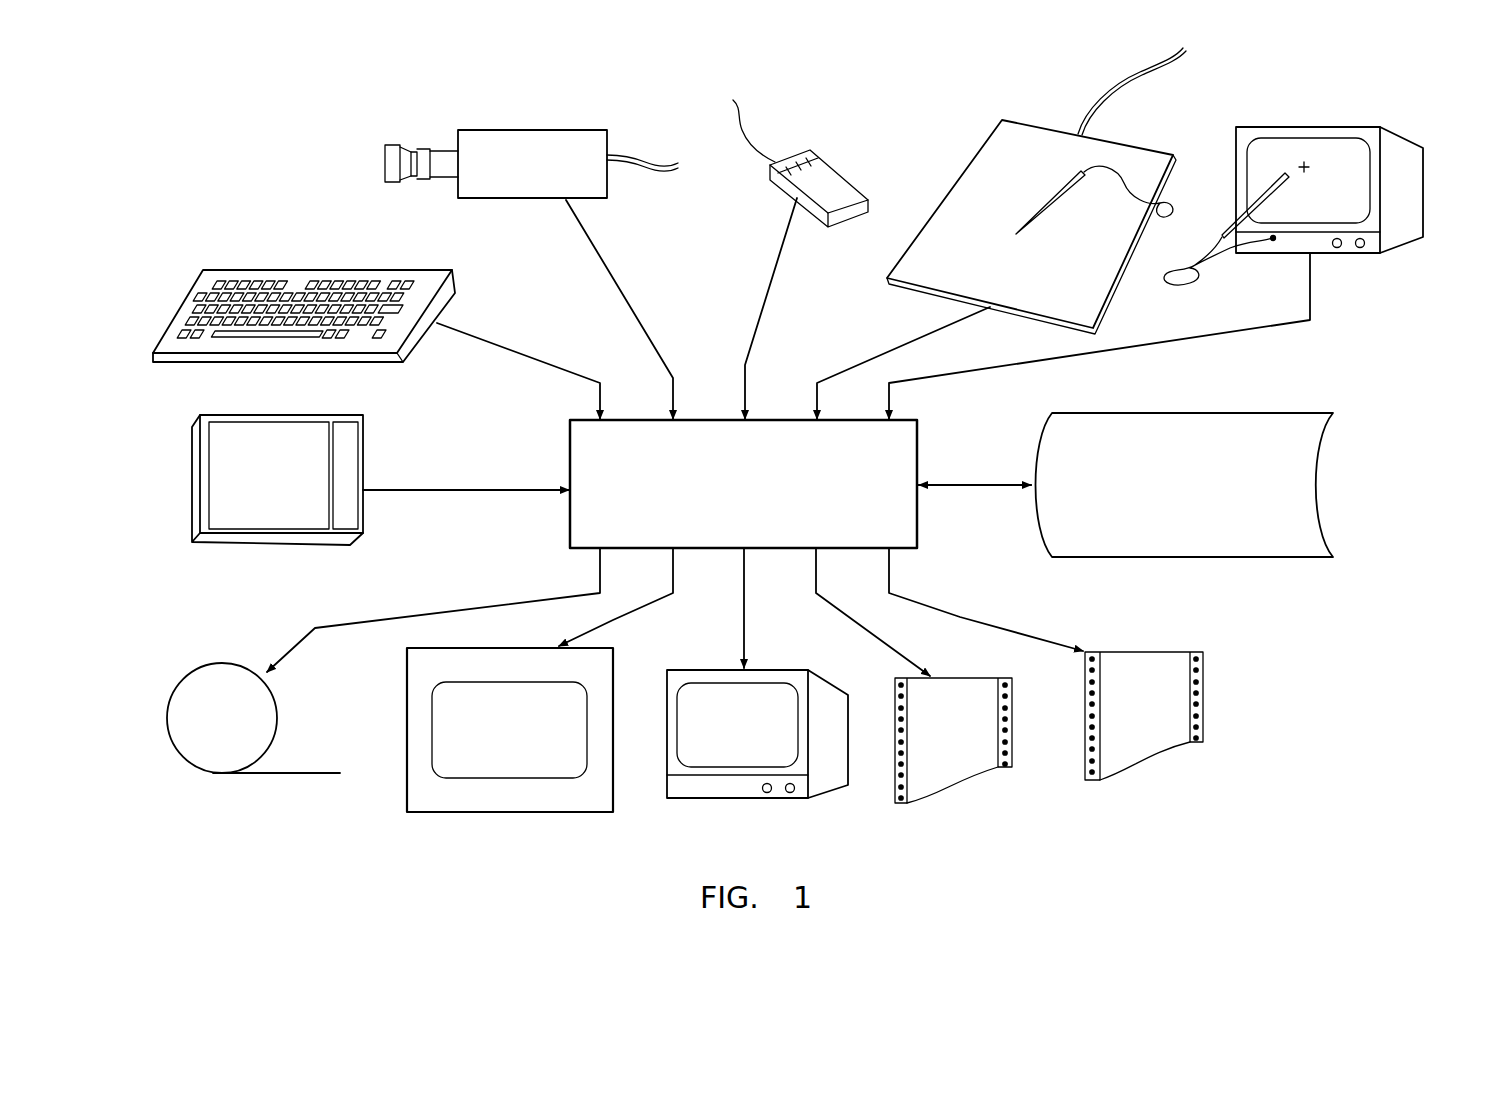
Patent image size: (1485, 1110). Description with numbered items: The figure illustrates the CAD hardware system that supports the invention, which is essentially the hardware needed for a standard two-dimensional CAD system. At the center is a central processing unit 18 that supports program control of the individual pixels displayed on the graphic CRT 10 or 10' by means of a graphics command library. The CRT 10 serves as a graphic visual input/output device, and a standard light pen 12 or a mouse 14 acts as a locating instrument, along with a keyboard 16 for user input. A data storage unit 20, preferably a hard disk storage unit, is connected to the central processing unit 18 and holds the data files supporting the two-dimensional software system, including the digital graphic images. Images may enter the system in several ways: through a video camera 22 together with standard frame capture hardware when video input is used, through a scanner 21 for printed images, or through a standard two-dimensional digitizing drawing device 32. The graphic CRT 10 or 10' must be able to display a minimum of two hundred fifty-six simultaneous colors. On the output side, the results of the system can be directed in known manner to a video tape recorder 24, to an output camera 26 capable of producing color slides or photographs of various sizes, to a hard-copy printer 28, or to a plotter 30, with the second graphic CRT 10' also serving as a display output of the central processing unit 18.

The CRT 10 is at (1329, 161).
The CRT 10' is at (757, 723).
The light pen 12 is at (1240, 207).
The mouse 14 is at (840, 163).
The keyboard 16 is at (280, 269).
The central processing unit 18 is at (567, 440).
The data storage unit 20 is at (1312, 494).
The scanner 21 is at (200, 497).
The video camera 22 is at (513, 129).
The video tape recorder 24 is at (208, 666).
The output camera 26 is at (618, 680).
The hard-copy printer 28 is at (957, 677).
The plotter 30 is at (1203, 652).
The two-dimensional digitizing drawing device 32 is at (1030, 126).